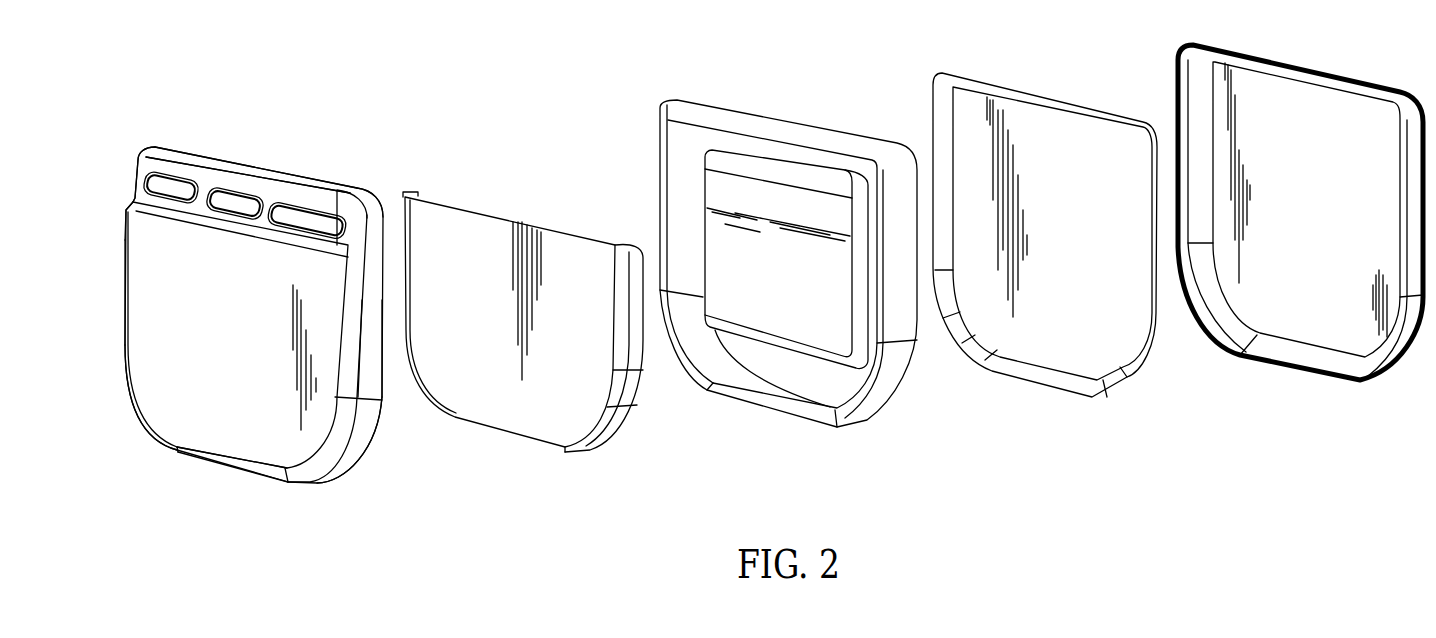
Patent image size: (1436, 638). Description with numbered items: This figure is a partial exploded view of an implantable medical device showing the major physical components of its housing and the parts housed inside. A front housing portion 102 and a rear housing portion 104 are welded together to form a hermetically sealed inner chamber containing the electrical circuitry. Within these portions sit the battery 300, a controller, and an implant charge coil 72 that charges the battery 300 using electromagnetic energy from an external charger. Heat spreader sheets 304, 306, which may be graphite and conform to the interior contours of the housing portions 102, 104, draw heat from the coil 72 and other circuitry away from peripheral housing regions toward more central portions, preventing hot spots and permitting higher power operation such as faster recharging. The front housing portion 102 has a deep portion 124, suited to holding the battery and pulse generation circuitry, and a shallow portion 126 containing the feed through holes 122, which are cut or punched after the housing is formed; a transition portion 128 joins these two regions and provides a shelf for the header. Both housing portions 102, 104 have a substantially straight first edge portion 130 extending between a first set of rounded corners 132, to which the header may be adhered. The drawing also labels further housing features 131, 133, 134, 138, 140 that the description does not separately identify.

The front housing portion 102 is at (247, 358).
The rear housing portion 104 is at (1328, 233).
The feed through holes 122 is at (183, 183).
The deep portion 124 is at (233, 420).
The shallow portion 126 is at (287, 198).
The transition portion 128 is at (135, 201).
The first edge portion 130 is at (268, 180).
The rim 131 is at (1288, 64).
The rounded corners 132 is at (140, 158).
The corner 133 is at (1185, 50).
The bottom edge 134 is at (228, 473).
The side wall 138 is at (123, 280).
The side wall 140 is at (375, 375).
The battery 300 is at (792, 315).
The heat spreader sheet 304 is at (600, 430).
The heat spreader sheet 306 is at (1120, 360).
The implant charge coil 72 is at (877, 393).